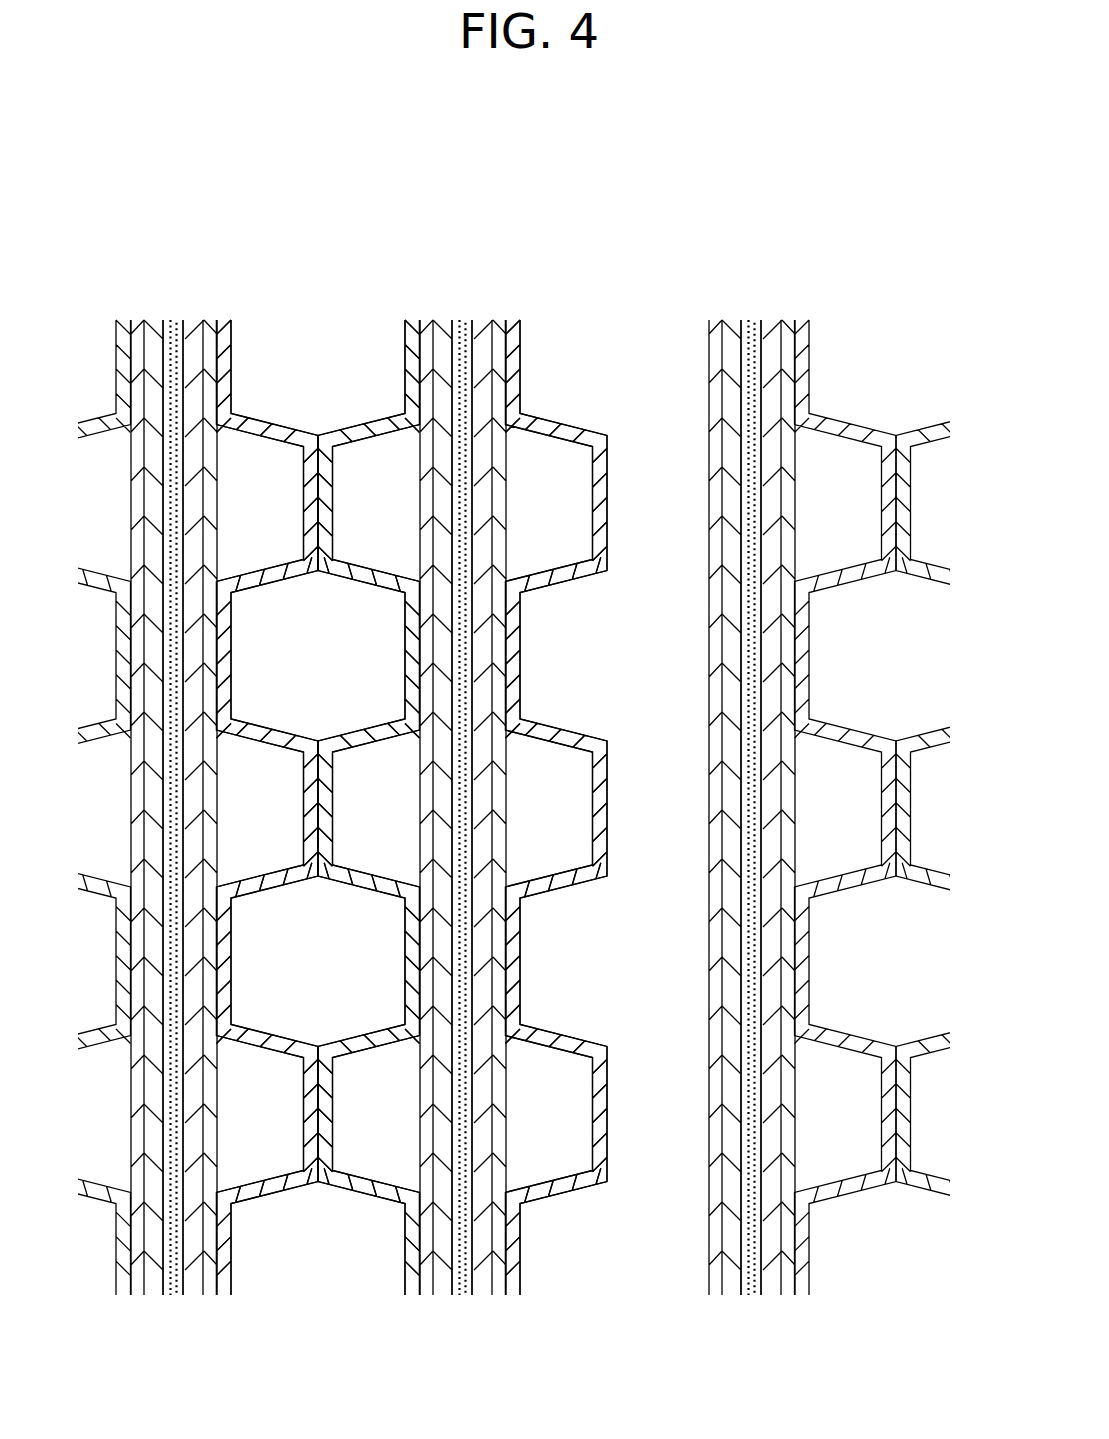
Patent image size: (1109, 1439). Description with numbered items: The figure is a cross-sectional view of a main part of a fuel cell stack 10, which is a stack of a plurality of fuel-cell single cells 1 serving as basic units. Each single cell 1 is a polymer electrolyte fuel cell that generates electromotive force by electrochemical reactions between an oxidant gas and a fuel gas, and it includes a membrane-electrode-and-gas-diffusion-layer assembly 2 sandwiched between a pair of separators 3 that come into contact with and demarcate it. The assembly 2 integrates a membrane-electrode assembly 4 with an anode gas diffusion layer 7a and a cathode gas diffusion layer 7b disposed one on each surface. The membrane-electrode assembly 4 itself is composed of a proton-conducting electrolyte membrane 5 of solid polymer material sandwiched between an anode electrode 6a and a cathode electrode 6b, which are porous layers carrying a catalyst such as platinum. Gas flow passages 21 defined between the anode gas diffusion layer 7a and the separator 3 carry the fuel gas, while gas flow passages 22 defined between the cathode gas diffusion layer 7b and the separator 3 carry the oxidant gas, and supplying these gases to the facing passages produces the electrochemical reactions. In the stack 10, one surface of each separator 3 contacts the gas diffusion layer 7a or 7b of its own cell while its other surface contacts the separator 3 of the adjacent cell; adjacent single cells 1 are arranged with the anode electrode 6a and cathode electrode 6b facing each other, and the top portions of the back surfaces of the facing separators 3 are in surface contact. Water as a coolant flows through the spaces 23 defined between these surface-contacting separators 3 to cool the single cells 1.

The fuel cell stack 10 is at (919, 175).
The fuel-cell single cell 1 is at (569, 715).
The membrane-electrode-and-gas-diffusion-layer assembly 2 is at (461, 740).
The separator 3 is at (569, 740).
The membrane-electrode assembly 4 is at (461, 758).
The electrolyte membrane 5 is at (462, 779).
The anode electrode 6a is at (435, 779).
The cathode electrode 6b is at (488, 779).
The anode gas diffusion layer 7a is at (408, 779).
The cathode gas diffusion layer 7b is at (515, 779).
The gas flow passages 21 is at (677, 1128).
The gas flow passages 22 is at (846, 1128).
The spaces 23 is at (908, 974).